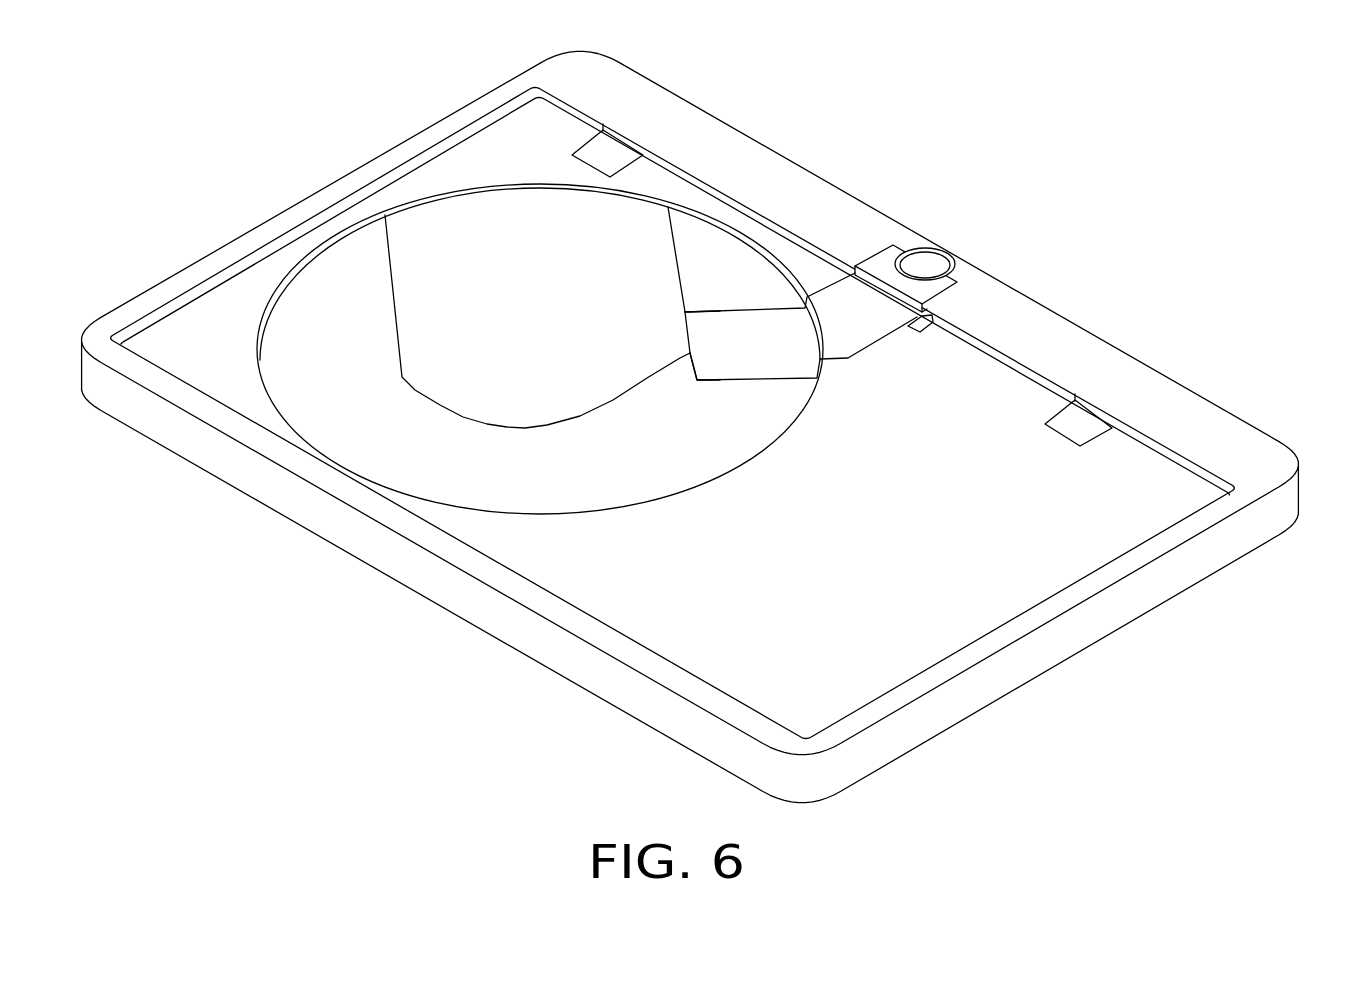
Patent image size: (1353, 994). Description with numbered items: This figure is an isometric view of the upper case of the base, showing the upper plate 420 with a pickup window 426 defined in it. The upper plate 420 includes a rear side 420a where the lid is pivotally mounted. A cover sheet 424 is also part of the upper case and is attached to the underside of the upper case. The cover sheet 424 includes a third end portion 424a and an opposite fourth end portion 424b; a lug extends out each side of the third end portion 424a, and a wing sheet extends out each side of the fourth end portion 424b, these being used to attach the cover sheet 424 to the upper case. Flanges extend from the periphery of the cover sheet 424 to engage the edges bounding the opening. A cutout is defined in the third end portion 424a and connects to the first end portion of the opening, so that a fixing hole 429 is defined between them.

The upper plate 420 is at (1133, 503).
The rear side 420a is at (1117, 372).
The cover sheet 424 is at (857, 320).
The third end portion 424a is at (928, 291).
The fourth end portion 424b is at (700, 335).
The pickup window 426 is at (505, 257).
The fixing hole 429 is at (928, 268).